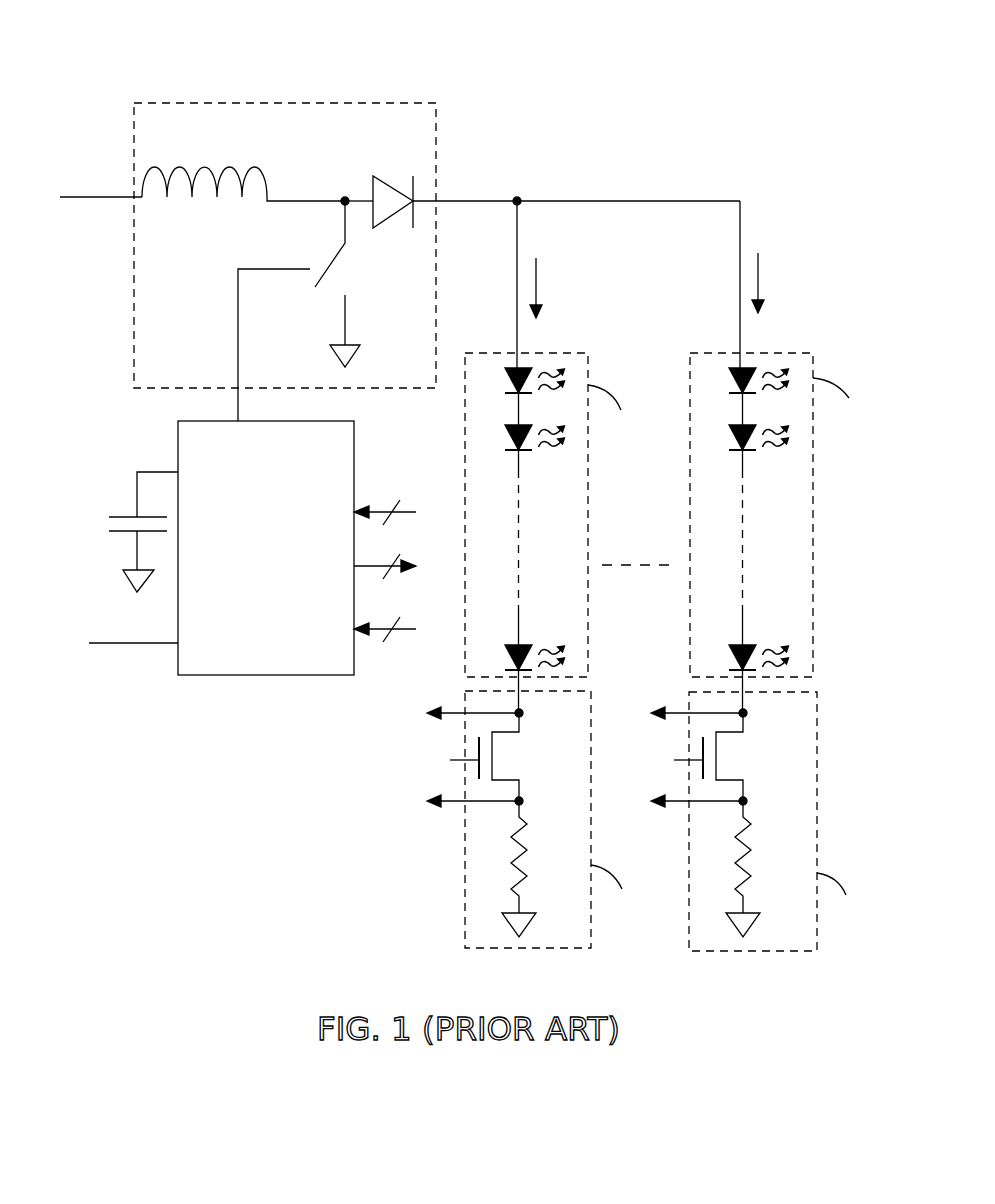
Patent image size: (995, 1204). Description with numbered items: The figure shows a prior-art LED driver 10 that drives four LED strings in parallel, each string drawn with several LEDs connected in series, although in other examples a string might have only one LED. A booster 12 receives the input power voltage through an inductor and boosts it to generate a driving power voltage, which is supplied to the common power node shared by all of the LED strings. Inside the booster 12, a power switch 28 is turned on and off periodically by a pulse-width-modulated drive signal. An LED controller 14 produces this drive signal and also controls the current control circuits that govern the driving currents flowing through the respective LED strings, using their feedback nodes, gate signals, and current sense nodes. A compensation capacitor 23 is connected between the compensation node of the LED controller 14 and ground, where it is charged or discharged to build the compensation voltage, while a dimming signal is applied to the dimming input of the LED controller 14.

The LED driver 10 is at (495, 80).
The booster 12 is at (257, 103).
The LED controller 14 is at (241, 545).
The compensation capacitor 23 is at (104, 520).
The power switch 28 is at (320, 256).